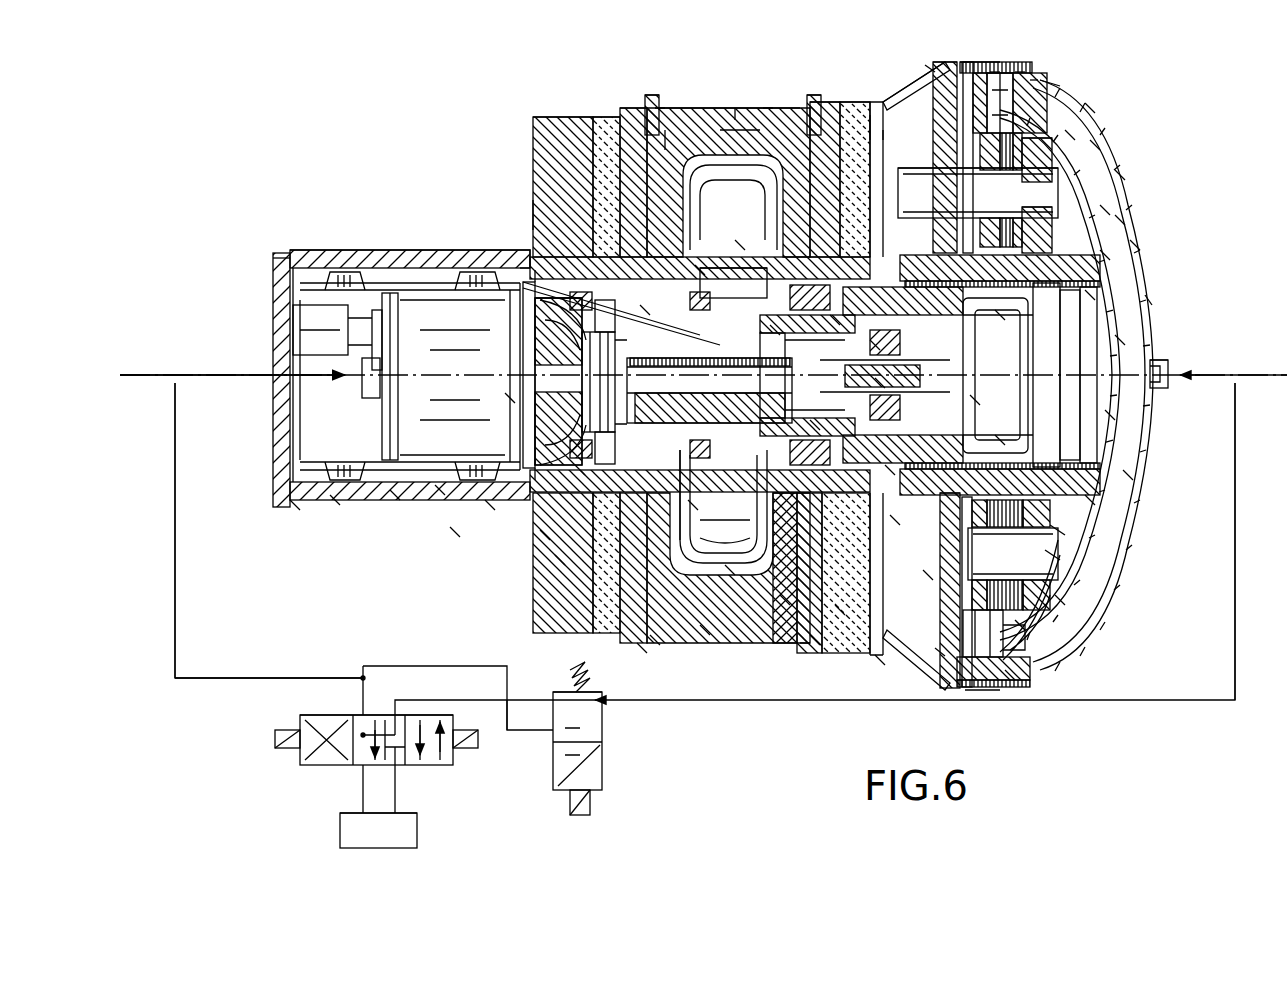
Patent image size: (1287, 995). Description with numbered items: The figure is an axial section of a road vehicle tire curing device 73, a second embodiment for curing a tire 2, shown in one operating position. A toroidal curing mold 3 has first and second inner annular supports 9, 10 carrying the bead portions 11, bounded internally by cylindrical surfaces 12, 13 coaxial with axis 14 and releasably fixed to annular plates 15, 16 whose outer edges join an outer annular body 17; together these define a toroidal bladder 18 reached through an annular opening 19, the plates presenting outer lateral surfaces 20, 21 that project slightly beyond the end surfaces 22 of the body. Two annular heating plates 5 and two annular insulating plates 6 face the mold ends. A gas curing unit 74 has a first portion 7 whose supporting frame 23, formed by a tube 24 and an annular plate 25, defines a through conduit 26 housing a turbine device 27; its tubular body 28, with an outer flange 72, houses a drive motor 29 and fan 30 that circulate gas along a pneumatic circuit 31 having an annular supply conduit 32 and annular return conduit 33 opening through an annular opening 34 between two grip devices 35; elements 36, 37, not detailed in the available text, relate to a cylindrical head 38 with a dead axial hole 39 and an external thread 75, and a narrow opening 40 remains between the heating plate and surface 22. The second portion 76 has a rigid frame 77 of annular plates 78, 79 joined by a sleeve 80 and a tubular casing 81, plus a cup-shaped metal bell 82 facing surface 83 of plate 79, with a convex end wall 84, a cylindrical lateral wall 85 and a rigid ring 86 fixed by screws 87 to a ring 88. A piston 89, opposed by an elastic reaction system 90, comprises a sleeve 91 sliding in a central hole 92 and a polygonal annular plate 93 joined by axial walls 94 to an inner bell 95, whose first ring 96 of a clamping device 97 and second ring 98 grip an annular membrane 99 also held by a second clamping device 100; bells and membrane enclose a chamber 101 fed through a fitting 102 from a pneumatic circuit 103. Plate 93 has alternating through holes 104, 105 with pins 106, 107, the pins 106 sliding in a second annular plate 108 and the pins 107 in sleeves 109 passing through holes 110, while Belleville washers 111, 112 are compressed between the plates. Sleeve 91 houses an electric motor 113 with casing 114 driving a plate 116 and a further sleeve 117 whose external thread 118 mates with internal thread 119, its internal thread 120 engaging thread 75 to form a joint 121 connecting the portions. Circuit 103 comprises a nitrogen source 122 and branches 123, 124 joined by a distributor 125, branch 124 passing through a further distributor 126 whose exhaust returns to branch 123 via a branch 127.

The road vehicle tire 2 is at (735, 110).
The toroidal curing mold 3 is at (700, 104).
The annular heating plate 5 is at (628, 118).
The annular insulating plate 6 is at (602, 130).
The first portion 7 is at (473, 246).
The first inner annular support 9 is at (545, 535).
The second inner annular support 10 is at (806, 646).
The bead portion 11 is at (660, 108).
The cylindrical surface 12 is at (645, 312).
The cylindrical surface 13 is at (760, 270).
The axis 14 is at (147, 372).
The annular plate 15 is at (880, 382).
The annular plate 16 is at (785, 602).
The outer annular body 17 is at (705, 632).
The toroidal bladder 18 is at (730, 572).
The annular opening 19 is at (692, 507).
The outer lateral surface 20 is at (560, 560).
The outer lateral surface 21 is at (841, 612).
The end surface 22 is at (641, 650).
The supporting frame 23 is at (490, 507).
The tube 24 is at (335, 502).
The annular plate 25 is at (556, 130).
The through conduit 26 is at (527, 266).
The turbine device 27 is at (440, 492).
The tubular body 28 is at (295, 507).
The drive motor 29 is at (395, 497).
The fan 30 is at (510, 398).
The pneumatic circuit 31 is at (535, 200).
The annular supply conduit 32 is at (700, 270).
The annular return conduit 33 is at (740, 245).
The annular opening 34 is at (741, 484).
The annular grip device 35 is at (667, 135).
The bearing 36 is at (580, 468).
The element 37 is at (530, 360).
The cylindrical head 38 is at (816, 425).
The internally threaded dead axial hole 39 is at (778, 330).
The relatively narrow opening 40 is at (651, 95).
The outer flange 72 is at (285, 256).
The road vehicle tire curing device 73 is at (744, 75).
The gas curing unit 74 is at (455, 534).
The external thread 75 is at (874, 114).
The second portion 76 is at (900, 46).
The rigid frame 77 is at (1092, 100).
The annular plate 78 is at (887, 133).
The annular plate 79 is at (940, 60).
The sleeve 80 is at (896, 521).
The tubular casing 81 is at (881, 662).
The cup-shaped metal bell 82 is at (1140, 245).
The surface 83 is at (928, 576).
The convex end wall 84 is at (1152, 302).
The cylindrical lateral wall 85 is at (1045, 82).
The rigid ring 86 is at (996, 72).
The screws 87 is at (985, 62).
The ring 88 is at (966, 62).
The piston 89 is at (1107, 208).
The elastic reaction system 90 is at (1022, 626).
The sleeve 91 is at (1107, 255).
The central hole 92 is at (1050, 230).
The polygonal annular plate 93 is at (1097, 145).
The axial walls 94 is at (1122, 175).
The bell 95 is at (1122, 340).
The first ring 96 is at (1020, 72).
The clamping device 97 is at (950, 660).
The second ring 98 is at (925, 40).
The annular membrane 99 is at (1012, 676).
The second clamping device 100 is at (981, 692).
The chamber 101 is at (1130, 475).
The fitting 102 is at (1168, 362).
The pneumatic circuit 103 is at (262, 682).
The through holes 104 is at (1062, 530).
The through holes 105 is at (1052, 176).
The pins 106 is at (1052, 556).
The pins 107 is at (1125, 220).
The second annular plate 108 is at (940, 654).
The sleeves 109 is at (1072, 135).
The holes 110 is at (914, 176).
The Belleville washers 111 is at (1062, 600).
The Belleville washers 112 is at (1036, 78).
The electric motor 113 is at (1098, 293).
The casing 114 is at (1112, 415).
The plate 116 is at (938, 340).
The further sleeve 117 is at (1000, 316).
The external thread 118 is at (1000, 440).
The internal thread 119 is at (976, 400).
The internal thread 120 is at (836, 320).
The joint 121 is at (890, 472).
The source 122 is at (412, 830).
The branch 123 is at (175, 690).
The branch 124 is at (1233, 668).
The distributor 125 is at (335, 768).
The further distributor 126 is at (606, 770).
The branch 127 is at (510, 740).